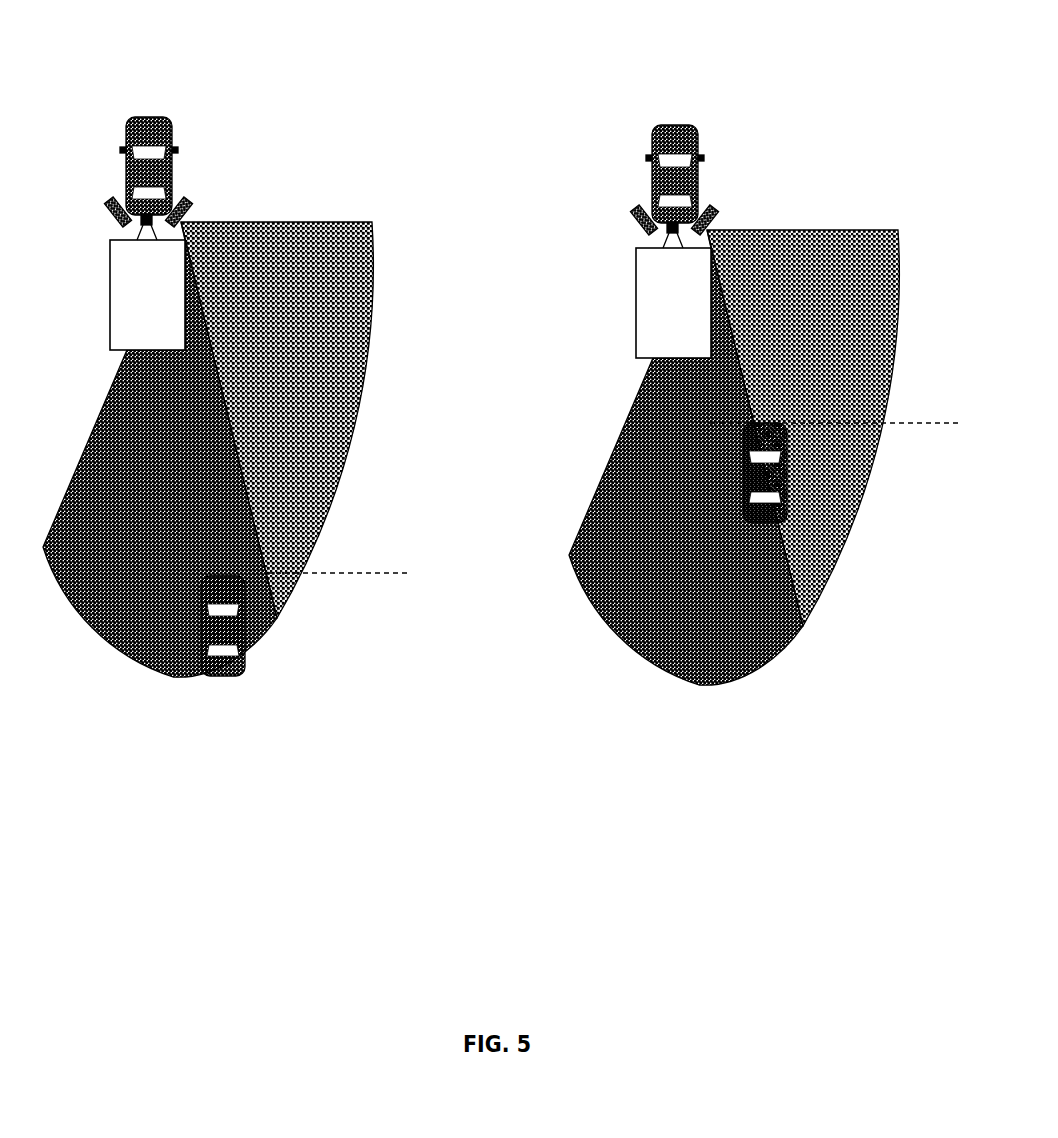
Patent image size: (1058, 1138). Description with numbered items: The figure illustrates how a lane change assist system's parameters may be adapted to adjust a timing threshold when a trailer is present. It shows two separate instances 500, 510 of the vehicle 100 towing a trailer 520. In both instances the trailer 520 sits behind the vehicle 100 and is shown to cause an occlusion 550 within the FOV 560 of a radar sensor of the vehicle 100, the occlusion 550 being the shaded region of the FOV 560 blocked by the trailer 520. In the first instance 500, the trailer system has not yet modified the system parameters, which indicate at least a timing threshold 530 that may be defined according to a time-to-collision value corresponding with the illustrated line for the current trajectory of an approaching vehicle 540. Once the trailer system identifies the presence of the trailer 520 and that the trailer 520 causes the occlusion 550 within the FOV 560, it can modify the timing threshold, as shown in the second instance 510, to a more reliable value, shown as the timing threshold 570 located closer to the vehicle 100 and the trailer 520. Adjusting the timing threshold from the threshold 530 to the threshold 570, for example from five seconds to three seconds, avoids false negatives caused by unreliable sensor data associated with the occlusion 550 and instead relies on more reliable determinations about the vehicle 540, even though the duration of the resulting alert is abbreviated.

The vehicle 100 is at (148, 117).
The instance 500 is at (292, 106).
The instance 510 is at (819, 113).
The trailer 520 is at (410, 299).
The timing threshold 530 is at (396, 572).
The vehicle 540 is at (246, 665).
The occlusion 550 is at (125, 634).
The FOV 560 is at (363, 222).
The timing threshold 570 is at (918, 422).